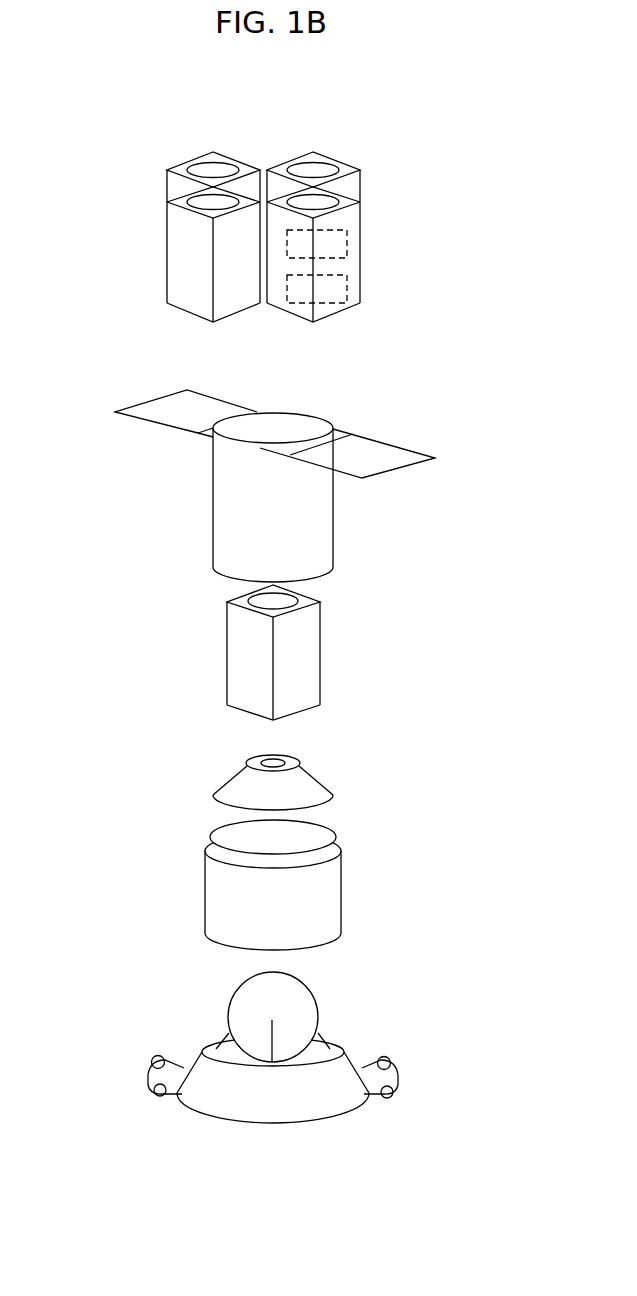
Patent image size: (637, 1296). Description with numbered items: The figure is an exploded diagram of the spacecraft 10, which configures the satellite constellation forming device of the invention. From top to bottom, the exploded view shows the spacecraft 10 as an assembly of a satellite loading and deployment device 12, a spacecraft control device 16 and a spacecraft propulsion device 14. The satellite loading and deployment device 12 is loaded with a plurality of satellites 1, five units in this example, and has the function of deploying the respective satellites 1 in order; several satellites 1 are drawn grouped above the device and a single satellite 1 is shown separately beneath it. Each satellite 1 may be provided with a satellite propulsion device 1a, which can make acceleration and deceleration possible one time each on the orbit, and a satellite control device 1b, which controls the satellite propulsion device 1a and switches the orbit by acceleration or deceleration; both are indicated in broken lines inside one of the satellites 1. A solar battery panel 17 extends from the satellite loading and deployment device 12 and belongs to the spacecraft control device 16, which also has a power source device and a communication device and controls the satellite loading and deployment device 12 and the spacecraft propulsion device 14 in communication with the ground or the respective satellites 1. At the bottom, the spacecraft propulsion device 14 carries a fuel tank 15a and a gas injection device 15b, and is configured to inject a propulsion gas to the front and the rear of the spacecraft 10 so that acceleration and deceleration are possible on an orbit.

The spacecraft 10 is at (124, 145).
The satellite 1 is at (187, 243).
The satellite propulsion device 1a is at (347, 240).
The satellite control device 1b is at (347, 293).
The satellite loading and deployment device 12 is at (190, 523).
The solar battery panel 17 is at (367, 462).
The spacecraft control device 16 is at (186, 861).
The spacecraft propulsion device 14 is at (164, 1111).
The fuel tank 15a is at (298, 993).
The gas injection device 15b is at (388, 1077).